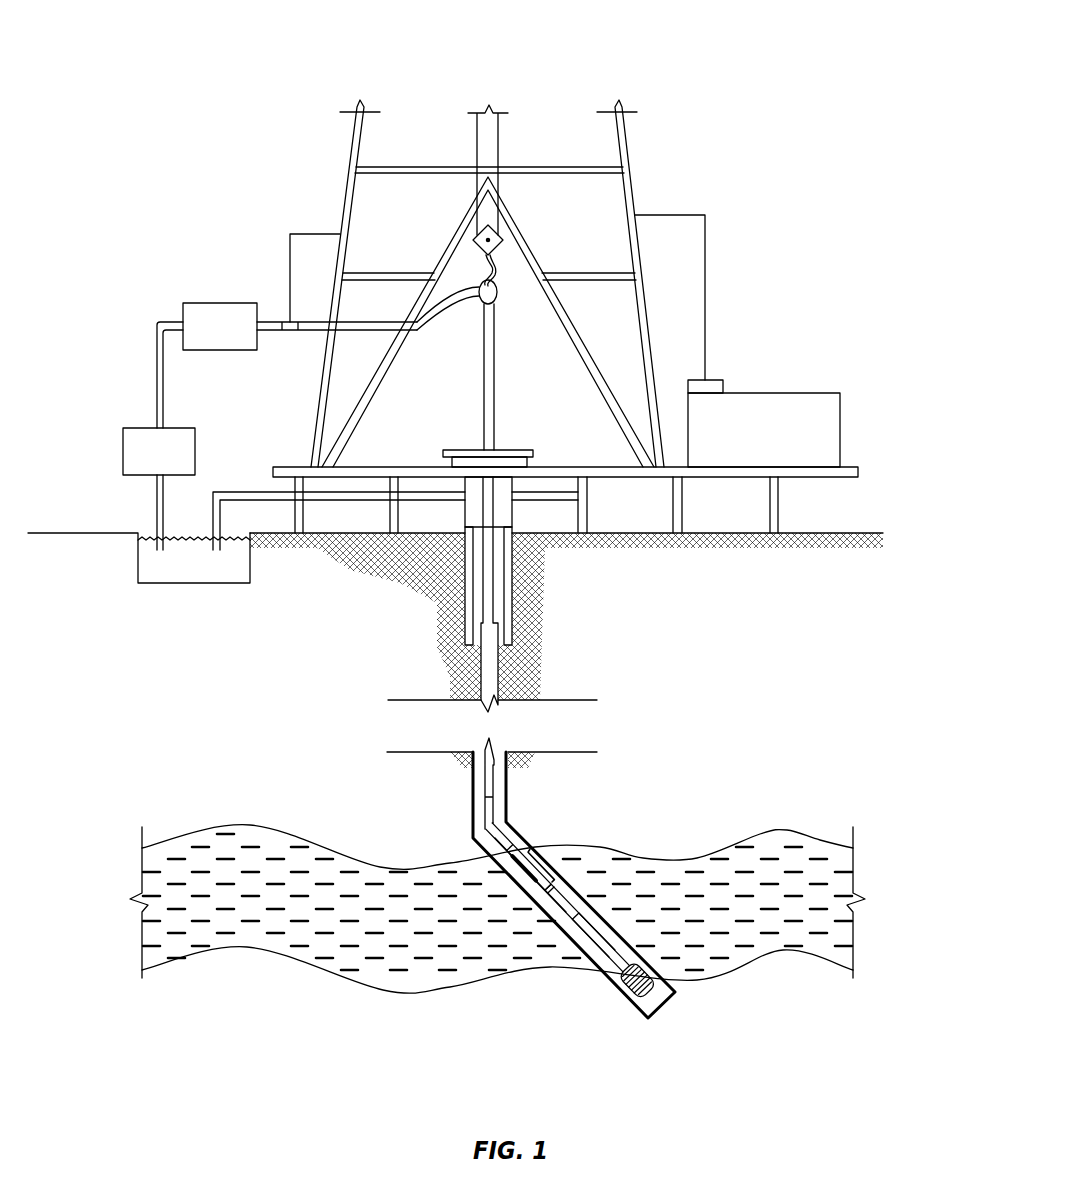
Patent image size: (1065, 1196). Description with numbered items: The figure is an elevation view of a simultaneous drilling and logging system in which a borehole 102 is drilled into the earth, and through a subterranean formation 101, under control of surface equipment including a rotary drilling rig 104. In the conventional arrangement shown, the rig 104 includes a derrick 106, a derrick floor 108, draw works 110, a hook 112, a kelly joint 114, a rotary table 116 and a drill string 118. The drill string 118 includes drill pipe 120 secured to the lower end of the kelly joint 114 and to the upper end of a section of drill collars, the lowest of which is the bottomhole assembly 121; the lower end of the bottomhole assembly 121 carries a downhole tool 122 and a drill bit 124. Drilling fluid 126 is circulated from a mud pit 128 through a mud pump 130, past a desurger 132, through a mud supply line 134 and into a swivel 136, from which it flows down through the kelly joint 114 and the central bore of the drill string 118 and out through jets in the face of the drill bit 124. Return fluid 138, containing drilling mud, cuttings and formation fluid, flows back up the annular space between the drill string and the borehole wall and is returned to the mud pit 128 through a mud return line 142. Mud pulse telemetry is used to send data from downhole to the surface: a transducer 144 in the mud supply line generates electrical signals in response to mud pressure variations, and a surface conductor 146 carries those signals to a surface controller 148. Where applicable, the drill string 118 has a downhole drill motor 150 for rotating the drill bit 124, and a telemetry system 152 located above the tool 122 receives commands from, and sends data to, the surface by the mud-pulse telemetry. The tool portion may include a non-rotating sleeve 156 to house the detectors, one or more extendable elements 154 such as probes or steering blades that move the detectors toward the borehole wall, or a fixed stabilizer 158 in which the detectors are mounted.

The subterranean formation 101 is at (755, 833).
The borehole 102 is at (468, 677).
The rotary drilling rig 104 is at (175, 55).
The derrick 106 is at (636, 193).
The derrick floor 108 is at (290, 467).
The draw works 110 is at (500, 140).
The hook 112 is at (500, 263).
The kelly joint 114 is at (497, 392).
The rotary table 116 is at (523, 450).
The drill string 118 is at (502, 678).
The drill pipe 120 is at (497, 653).
The bottomhole assembly 121 is at (619, 918).
The downhole tool 122 is at (513, 883).
The drill bit 124 is at (625, 985).
The drilling fluid 126 is at (155, 584).
The mud pit 128 is at (217, 578).
The mud pump 130 is at (140, 428).
The desurger 132 is at (200, 303).
The mud supply line 134 is at (416, 331).
The swivel 136 is at (497, 300).
The return fluid 138 is at (471, 832).
The mud return line 142 is at (442, 492).
The transducer 144 is at (293, 332).
The surface conductor 146 is at (310, 233).
The surface controller 148 is at (800, 393).
The downhole drill motor 150 is at (607, 943).
The telemetry system 152 is at (496, 806).
The extendable elements 154 is at (538, 860).
The non-rotating sleeve 156 is at (540, 903).
The fixed stabilizer 158 is at (515, 868).